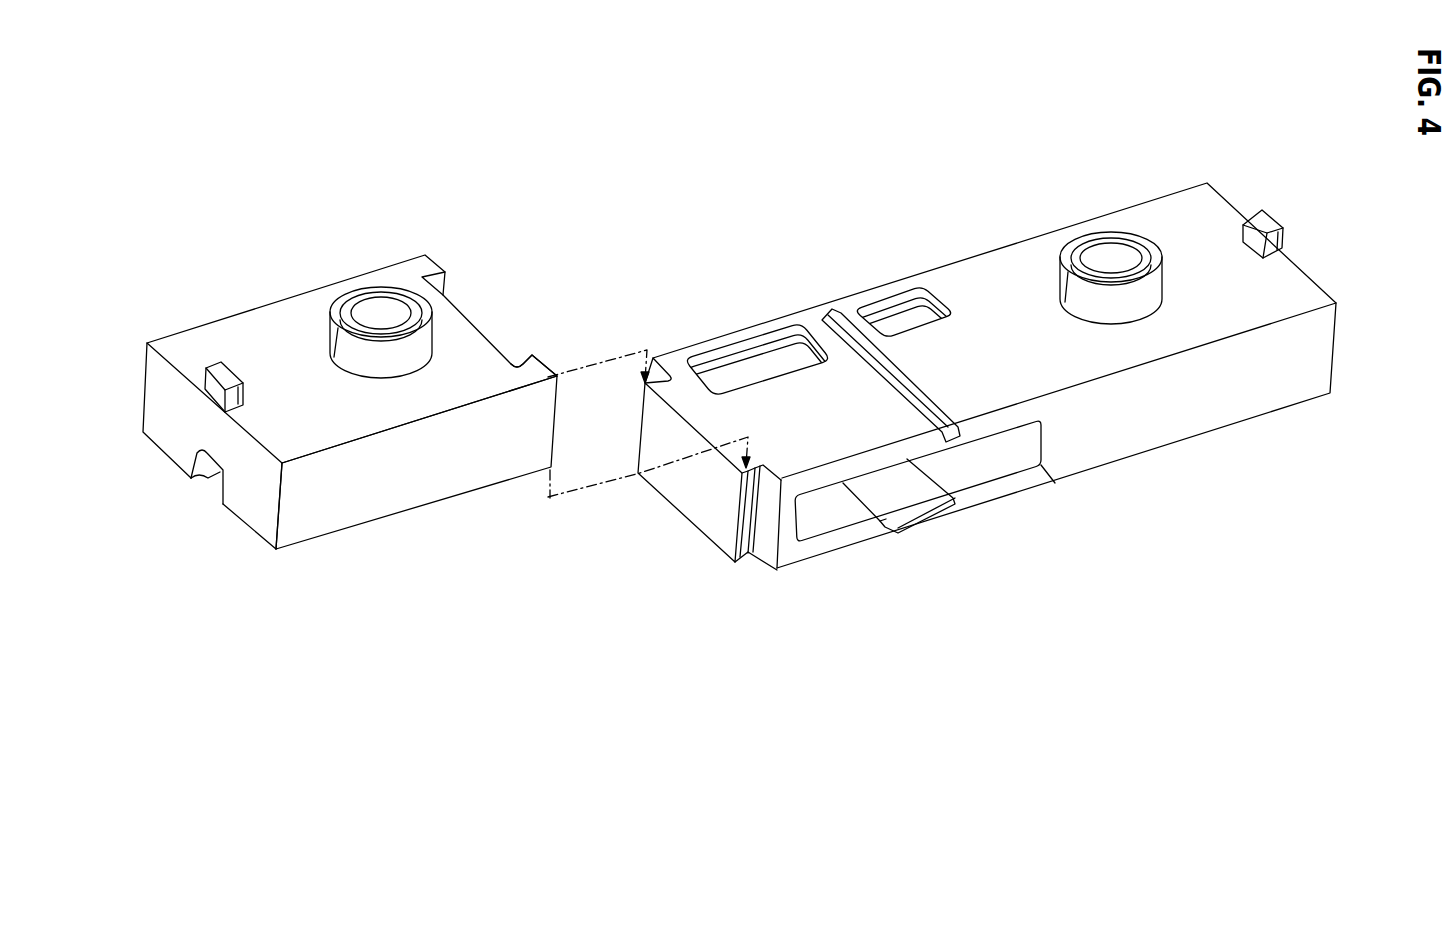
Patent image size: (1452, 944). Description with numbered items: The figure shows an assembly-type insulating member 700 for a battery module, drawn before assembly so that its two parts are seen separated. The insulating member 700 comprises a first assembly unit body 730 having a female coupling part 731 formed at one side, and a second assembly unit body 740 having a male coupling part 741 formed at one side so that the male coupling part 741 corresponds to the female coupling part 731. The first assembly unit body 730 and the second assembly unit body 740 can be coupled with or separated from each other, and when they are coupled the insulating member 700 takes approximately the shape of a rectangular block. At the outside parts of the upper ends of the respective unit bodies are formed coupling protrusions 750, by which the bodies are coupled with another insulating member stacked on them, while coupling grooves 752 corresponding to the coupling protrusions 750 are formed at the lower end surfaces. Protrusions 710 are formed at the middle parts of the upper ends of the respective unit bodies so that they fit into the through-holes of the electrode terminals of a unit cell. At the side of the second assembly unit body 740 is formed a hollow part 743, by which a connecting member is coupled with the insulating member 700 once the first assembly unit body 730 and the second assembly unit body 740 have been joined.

The assembly-type insulating member 700 is at (161, 82).
The protrusion 710 is at (388, 293).
The first assembly unit body 730 is at (327, 513).
The female coupling part 731 is at (472, 327).
The second assembly unit body 740 is at (1198, 422).
The male coupling part 741 is at (703, 513).
The hollow part 743 is at (912, 488).
The coupling protrusion 750 is at (1247, 215).
The coupling groove 752 is at (213, 485).